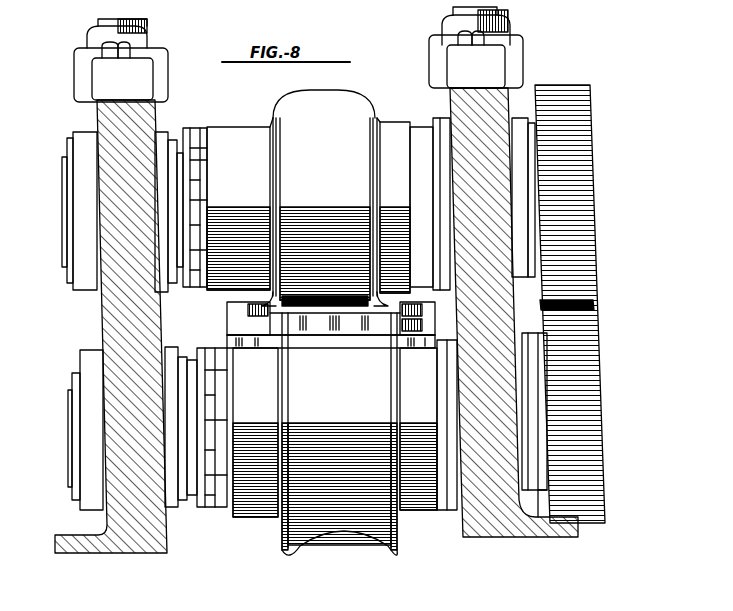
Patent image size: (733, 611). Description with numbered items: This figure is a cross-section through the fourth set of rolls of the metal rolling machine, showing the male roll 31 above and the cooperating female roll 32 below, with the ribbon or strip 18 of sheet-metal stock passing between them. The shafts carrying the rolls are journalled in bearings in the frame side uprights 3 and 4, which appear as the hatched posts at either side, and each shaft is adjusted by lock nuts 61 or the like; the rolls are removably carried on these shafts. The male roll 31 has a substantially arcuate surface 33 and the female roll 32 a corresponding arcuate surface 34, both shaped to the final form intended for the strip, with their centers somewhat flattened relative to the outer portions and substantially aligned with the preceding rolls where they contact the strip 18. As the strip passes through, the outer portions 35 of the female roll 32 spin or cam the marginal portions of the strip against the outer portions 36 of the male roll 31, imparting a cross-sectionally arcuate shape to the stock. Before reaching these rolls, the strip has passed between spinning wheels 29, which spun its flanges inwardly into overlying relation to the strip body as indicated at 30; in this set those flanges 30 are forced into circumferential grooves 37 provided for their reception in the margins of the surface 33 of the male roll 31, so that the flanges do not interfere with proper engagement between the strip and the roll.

The side upright 3 is at (500, 522).
The side upright 4 is at (138, 540).
The ribbon or strip 18 is at (309, 318).
The spinning wheel 29 is at (229, 317).
The flange 30 is at (269, 298).
The male roll 31 is at (247, 188).
The female roll 32 is at (282, 542).
The arcuate cooperating surface 33 is at (314, 92).
The arcuate cooperating surface 34 is at (252, 456).
The outer portion 35 is at (386, 552).
The outer portion 36 is at (278, 116).
The circumferential groove 37 is at (275, 120).
The lock nut 61 is at (203, 290).